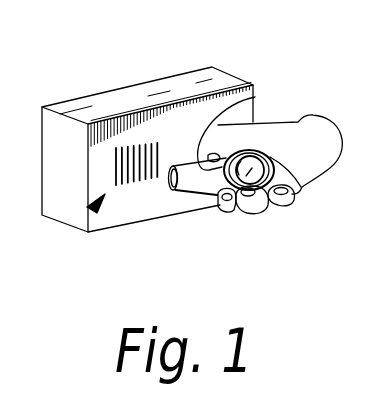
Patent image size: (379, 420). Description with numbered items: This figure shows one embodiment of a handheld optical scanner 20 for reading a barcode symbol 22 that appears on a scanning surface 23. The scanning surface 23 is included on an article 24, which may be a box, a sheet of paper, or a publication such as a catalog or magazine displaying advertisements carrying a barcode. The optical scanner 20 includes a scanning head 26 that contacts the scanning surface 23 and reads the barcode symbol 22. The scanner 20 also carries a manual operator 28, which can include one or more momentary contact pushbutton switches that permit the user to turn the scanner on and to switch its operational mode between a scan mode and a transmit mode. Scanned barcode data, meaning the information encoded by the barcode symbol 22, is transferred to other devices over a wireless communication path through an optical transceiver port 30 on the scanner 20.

The handheld optical scanner 20 is at (255, 97).
The barcode symbol 22 is at (88, 207).
The scanning surface 23 is at (117, 120).
The article 24 is at (155, 80).
The scanning head 26 is at (173, 185).
The manual operator 28 is at (219, 193).
The optical transceiver port 30 is at (303, 190).